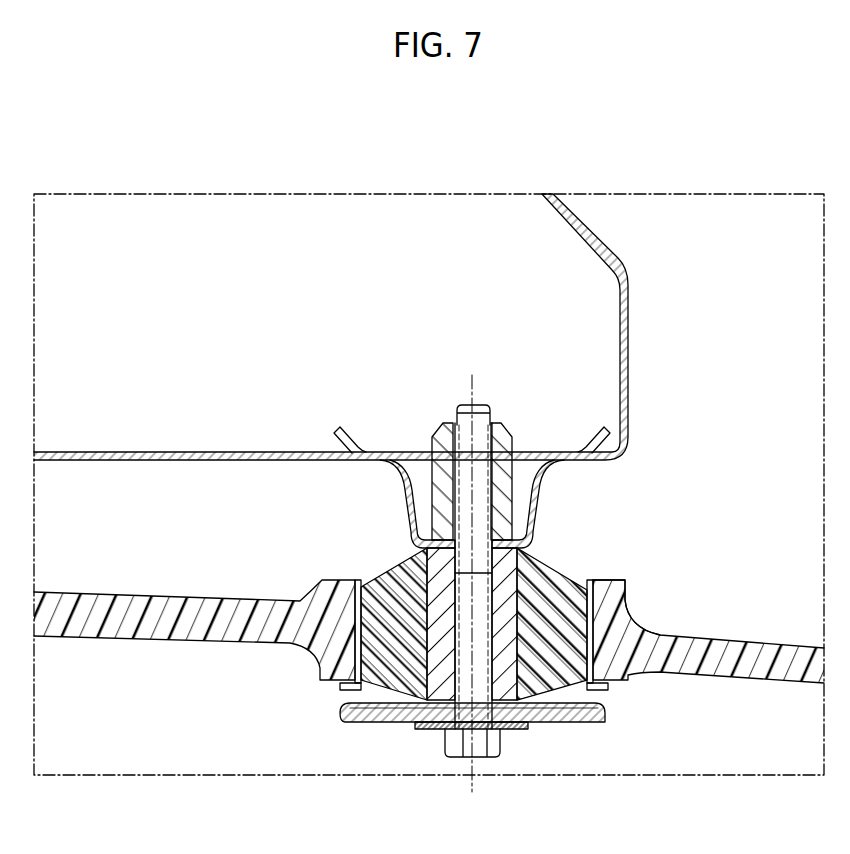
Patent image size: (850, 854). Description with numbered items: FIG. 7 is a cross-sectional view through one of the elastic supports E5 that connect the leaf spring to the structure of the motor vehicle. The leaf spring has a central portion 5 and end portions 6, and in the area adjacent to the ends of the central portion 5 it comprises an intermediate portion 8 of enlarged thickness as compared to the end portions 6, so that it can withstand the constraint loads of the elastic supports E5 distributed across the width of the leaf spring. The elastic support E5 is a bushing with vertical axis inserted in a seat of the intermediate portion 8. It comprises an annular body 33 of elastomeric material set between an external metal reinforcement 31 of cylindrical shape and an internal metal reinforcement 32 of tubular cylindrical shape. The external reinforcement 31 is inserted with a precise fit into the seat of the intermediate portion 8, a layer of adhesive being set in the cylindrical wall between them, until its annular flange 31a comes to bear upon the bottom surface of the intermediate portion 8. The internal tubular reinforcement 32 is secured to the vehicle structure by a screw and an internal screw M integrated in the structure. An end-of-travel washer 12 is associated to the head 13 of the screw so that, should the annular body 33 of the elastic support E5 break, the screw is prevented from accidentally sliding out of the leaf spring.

The central portion 5 is at (153, 632).
The end portion 6 is at (752, 635).
The intermediate portion 8 is at (612, 600).
The end-of-travel washer 12 is at (604, 715).
The head 13 is at (456, 758).
The external metal reinforcement 31 is at (592, 578).
The annular flange 31a is at (600, 690).
The internal metal reinforcement 32 is at (437, 583).
The annular body 33 is at (402, 587).
The elastic support E5 is at (372, 688).
The internal screw M is at (508, 473).